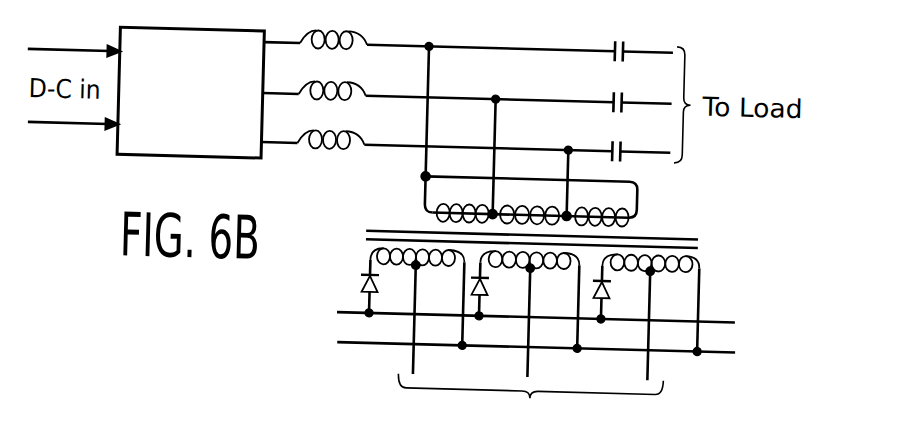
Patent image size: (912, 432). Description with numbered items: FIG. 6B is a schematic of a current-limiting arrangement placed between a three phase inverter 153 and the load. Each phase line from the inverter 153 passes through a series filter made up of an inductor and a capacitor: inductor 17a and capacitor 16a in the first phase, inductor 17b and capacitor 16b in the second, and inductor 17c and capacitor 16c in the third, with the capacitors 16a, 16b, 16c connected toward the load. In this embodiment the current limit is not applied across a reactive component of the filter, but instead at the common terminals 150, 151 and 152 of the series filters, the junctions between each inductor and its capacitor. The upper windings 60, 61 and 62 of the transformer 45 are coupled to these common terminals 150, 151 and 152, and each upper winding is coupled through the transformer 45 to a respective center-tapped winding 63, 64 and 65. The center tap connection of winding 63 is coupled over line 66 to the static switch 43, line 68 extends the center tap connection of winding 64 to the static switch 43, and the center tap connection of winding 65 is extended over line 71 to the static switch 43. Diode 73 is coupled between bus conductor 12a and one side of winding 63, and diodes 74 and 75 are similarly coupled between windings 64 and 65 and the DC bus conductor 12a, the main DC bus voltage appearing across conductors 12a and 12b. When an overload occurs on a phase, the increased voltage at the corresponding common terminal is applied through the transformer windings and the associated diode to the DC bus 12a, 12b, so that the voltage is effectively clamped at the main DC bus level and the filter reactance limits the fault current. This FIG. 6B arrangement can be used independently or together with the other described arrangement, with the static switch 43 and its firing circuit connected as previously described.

The three phase inverter 153 is at (191, 80).
The inductor 17a is at (361, 36).
The inductor 17b is at (362, 88).
The inductor 17c is at (362, 138).
The common terminal 150 is at (426, 44).
The common terminal 151 is at (492, 96).
The common terminal 152 is at (566, 145).
The capacitor 16a is at (621, 38).
The capacitor 16b is at (622, 89).
The capacitor 16c is at (621, 136).
The winding 60 is at (462, 203).
The winding 61 is at (530, 205).
The winding 62 is at (602, 207).
The transformer 45 is at (757, 247).
The winding 63 is at (417, 270).
The winding 64 is at (530, 273).
The winding 65 is at (651, 274).
The diode 73 is at (374, 288).
The diode 74 is at (485, 290).
The diode 75 is at (607, 290).
The line 66 is at (417, 363).
The line 68 is at (532, 362).
The line 71 is at (652, 366).
The bus conductor 12a is at (737, 314).
The bus conductor 12b is at (739, 346).
The static switch 43 is at (655, 423).